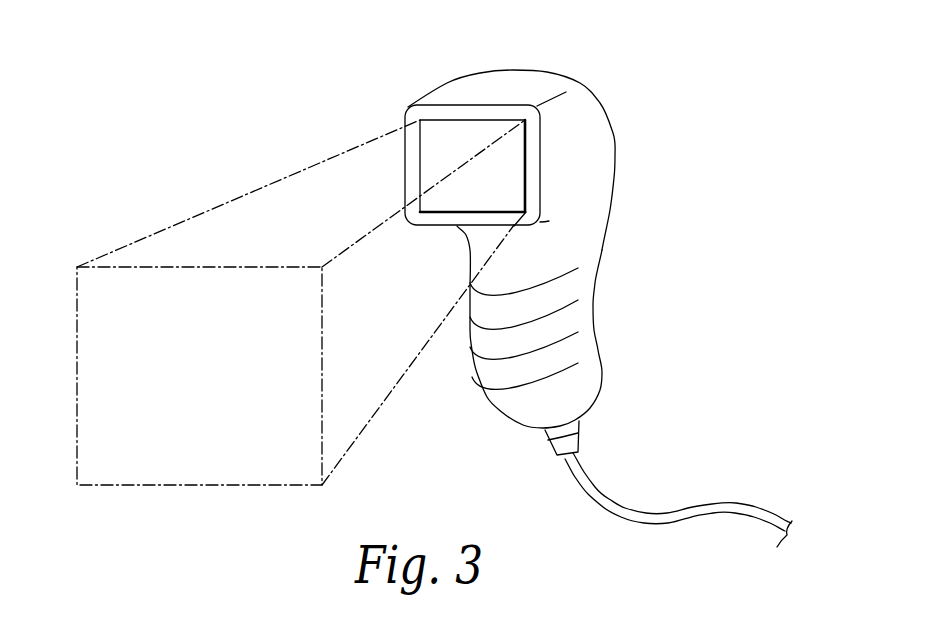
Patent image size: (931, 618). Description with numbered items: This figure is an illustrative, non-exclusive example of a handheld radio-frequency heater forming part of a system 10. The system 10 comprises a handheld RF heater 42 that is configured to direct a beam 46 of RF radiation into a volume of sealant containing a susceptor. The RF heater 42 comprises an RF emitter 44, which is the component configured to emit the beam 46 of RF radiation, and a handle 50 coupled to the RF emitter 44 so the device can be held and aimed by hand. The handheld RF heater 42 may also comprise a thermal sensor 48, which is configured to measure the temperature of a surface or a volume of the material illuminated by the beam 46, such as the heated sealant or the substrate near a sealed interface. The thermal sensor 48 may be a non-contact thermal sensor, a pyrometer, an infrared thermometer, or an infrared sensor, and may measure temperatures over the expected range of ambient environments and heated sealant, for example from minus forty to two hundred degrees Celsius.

The system 10 is at (123, 76).
The handheld RF heater 42 is at (141, 133).
The RF emitter 44 is at (582, 128).
The beam of RF radiation 46 is at (157, 232).
The thermal sensor 48 is at (593, 177).
The handle 50 is at (597, 305).